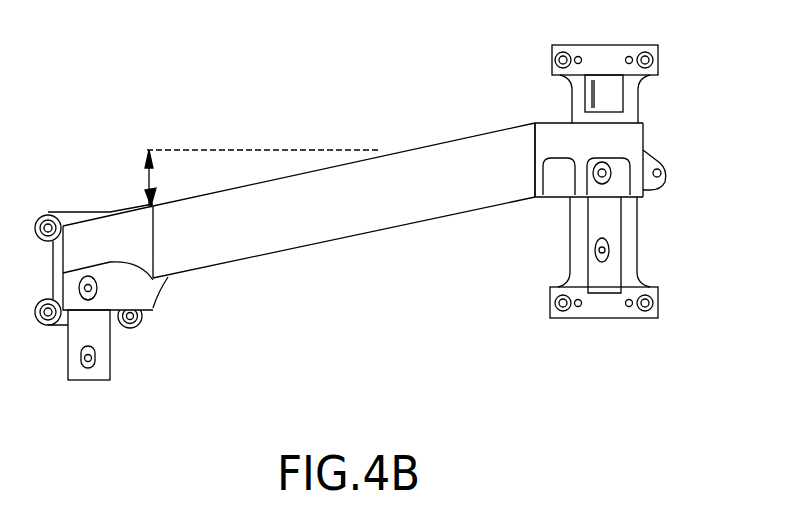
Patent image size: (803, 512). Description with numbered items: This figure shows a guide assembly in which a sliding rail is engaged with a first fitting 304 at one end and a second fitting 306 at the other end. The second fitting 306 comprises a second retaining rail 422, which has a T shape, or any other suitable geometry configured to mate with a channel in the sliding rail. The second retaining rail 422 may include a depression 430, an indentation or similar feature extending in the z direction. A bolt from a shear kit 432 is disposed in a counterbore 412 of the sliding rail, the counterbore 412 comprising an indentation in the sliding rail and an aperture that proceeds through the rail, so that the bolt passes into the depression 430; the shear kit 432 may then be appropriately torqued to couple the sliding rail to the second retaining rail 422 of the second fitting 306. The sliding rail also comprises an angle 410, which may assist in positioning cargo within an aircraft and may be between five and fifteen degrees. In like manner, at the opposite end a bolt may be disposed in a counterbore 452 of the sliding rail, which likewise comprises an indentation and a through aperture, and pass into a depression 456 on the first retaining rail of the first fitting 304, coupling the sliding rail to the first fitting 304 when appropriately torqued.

The angle 410 is at (146, 176).
The shear kit 432 is at (602, 173).
The counterbore 412 is at (611, 180).
The second retaining rail 422 is at (607, 218).
The depression 430 is at (605, 250).
The second fitting 306 is at (610, 318).
The counterbore 452 is at (97, 292).
The first fitting 304 is at (132, 328).
The depression 456 is at (88, 366).